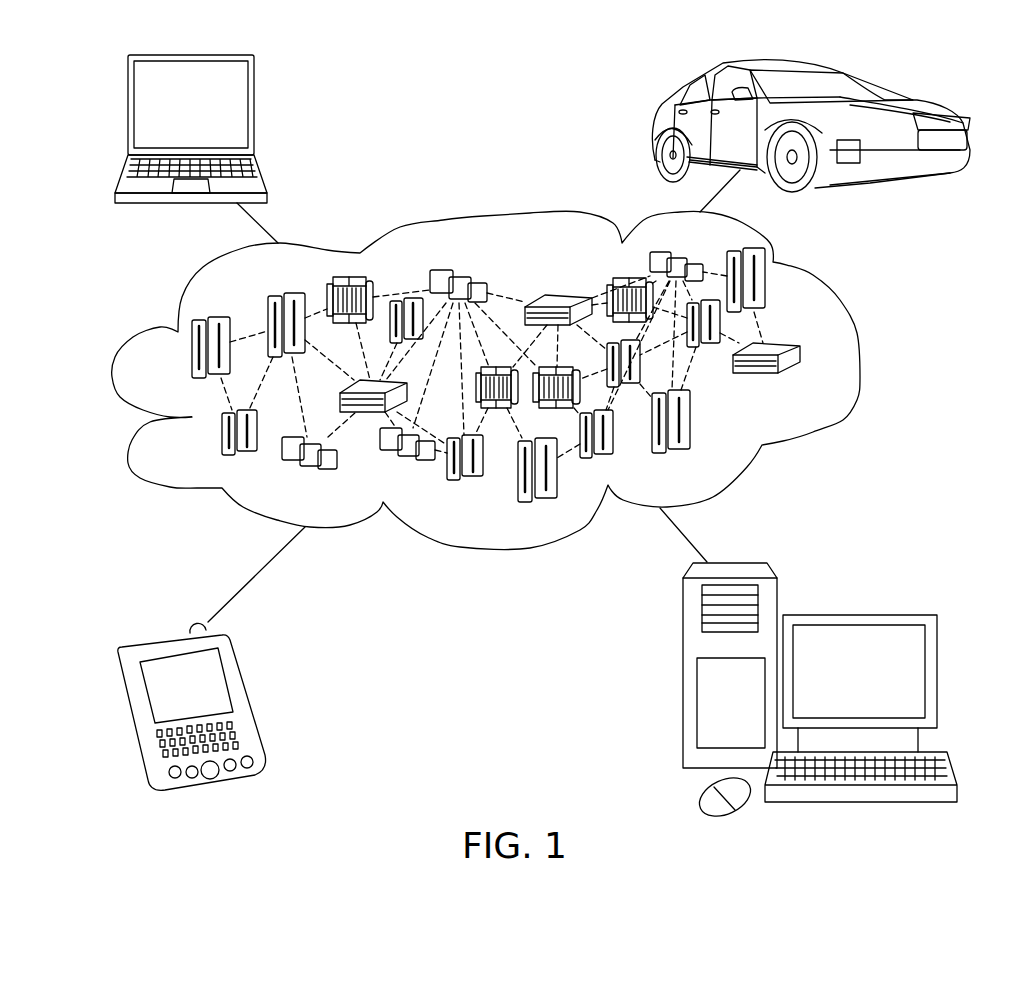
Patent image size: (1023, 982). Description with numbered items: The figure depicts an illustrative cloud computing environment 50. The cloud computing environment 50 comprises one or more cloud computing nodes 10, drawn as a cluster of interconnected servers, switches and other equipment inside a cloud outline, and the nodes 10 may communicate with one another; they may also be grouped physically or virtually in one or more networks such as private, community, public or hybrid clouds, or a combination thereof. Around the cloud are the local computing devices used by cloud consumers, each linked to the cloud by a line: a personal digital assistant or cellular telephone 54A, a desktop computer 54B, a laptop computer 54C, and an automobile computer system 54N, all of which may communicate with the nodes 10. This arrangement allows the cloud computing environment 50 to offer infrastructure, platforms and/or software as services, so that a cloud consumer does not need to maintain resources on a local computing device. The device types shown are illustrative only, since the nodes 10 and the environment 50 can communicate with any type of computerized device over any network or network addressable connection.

The cloud computing environment 50 is at (857, 357).
The cloud computing node 10 is at (803, 380).
The personal digital assistant or cellular telephone 54A is at (243, 698).
The desktop computer 54B is at (853, 615).
The laptop computer 54C is at (254, 113).
The automobile computer system 54N is at (657, 127).